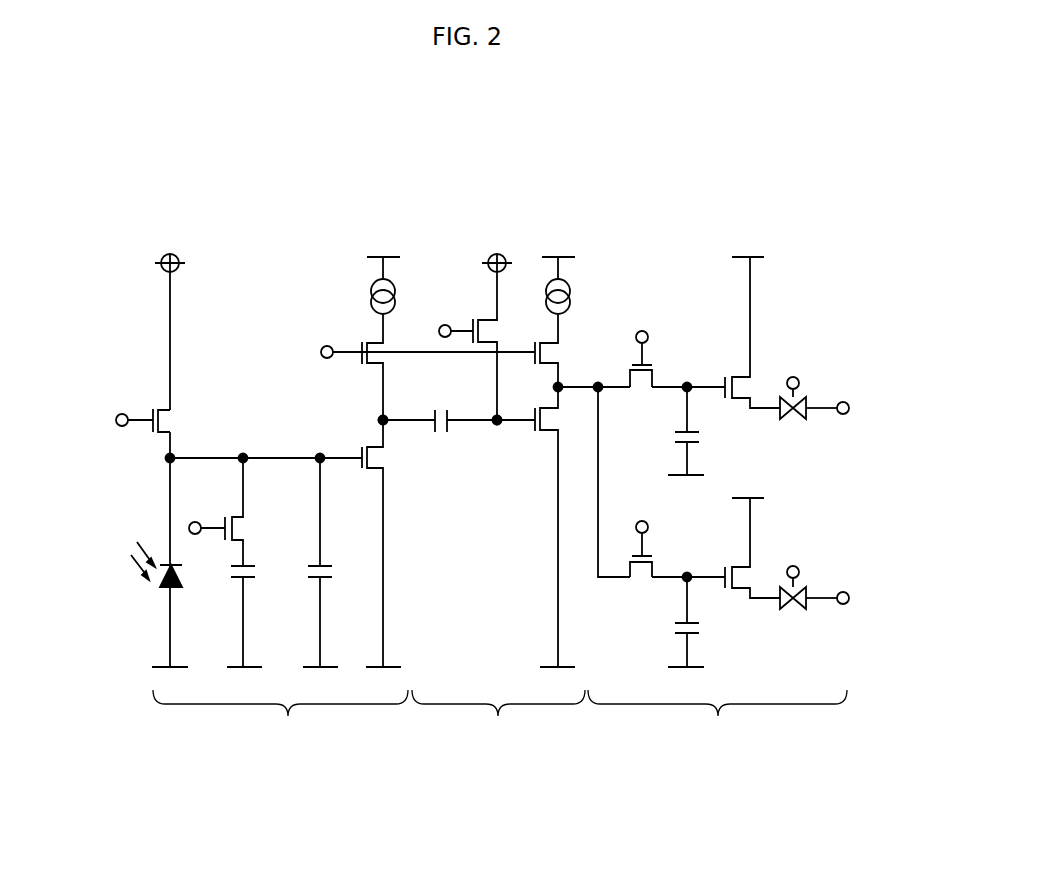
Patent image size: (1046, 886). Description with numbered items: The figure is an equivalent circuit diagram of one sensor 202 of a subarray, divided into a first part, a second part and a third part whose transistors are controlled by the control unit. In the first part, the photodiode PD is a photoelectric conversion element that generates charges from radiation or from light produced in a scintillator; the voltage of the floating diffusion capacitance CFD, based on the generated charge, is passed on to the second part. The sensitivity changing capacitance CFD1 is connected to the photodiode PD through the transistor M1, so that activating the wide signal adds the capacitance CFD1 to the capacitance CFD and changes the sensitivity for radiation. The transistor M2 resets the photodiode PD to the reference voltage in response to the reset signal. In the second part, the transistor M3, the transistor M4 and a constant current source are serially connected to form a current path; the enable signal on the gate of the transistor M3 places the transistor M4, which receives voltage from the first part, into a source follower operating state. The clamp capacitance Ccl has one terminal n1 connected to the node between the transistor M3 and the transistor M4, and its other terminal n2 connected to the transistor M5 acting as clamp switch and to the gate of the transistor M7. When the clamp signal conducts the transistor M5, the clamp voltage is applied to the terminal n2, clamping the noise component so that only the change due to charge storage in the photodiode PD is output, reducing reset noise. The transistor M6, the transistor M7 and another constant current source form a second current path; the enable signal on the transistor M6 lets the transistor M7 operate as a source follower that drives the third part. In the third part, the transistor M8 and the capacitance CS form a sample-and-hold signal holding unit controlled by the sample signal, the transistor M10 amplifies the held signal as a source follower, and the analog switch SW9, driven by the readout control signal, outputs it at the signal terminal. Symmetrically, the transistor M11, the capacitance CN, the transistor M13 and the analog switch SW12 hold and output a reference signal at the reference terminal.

The sensor 202 is at (229, 191).
The transistor M1 is at (232, 512).
The transistor M2 is at (159, 415).
The transistor M3 is at (423, 338).
The transistor M4 is at (370, 542).
The transistor M5 is at (464, 324).
The transistor M6 is at (566, 322).
The transistor M7 is at (566, 527).
The transistor M8 is at (676, 362).
The transistor M10 is at (738, 332).
The transistor M11 is at (674, 551).
The transistor M13 is at (738, 548).
The photodiode PD is at (174, 562).
The sensitivity changing capacitance CFD1 is at (271, 616).
The floating diffusion capacitance CFD is at (340, 562).
The clamp capacitance Ccl is at (459, 434).
The capacitance CS is at (701, 431).
The capacitance CN is at (703, 622).
The analog switch SW9 is at (819, 402).
The analog switch SW12 is at (819, 594).
The terminal n1 is at (402, 425).
The terminal n2 is at (472, 425).